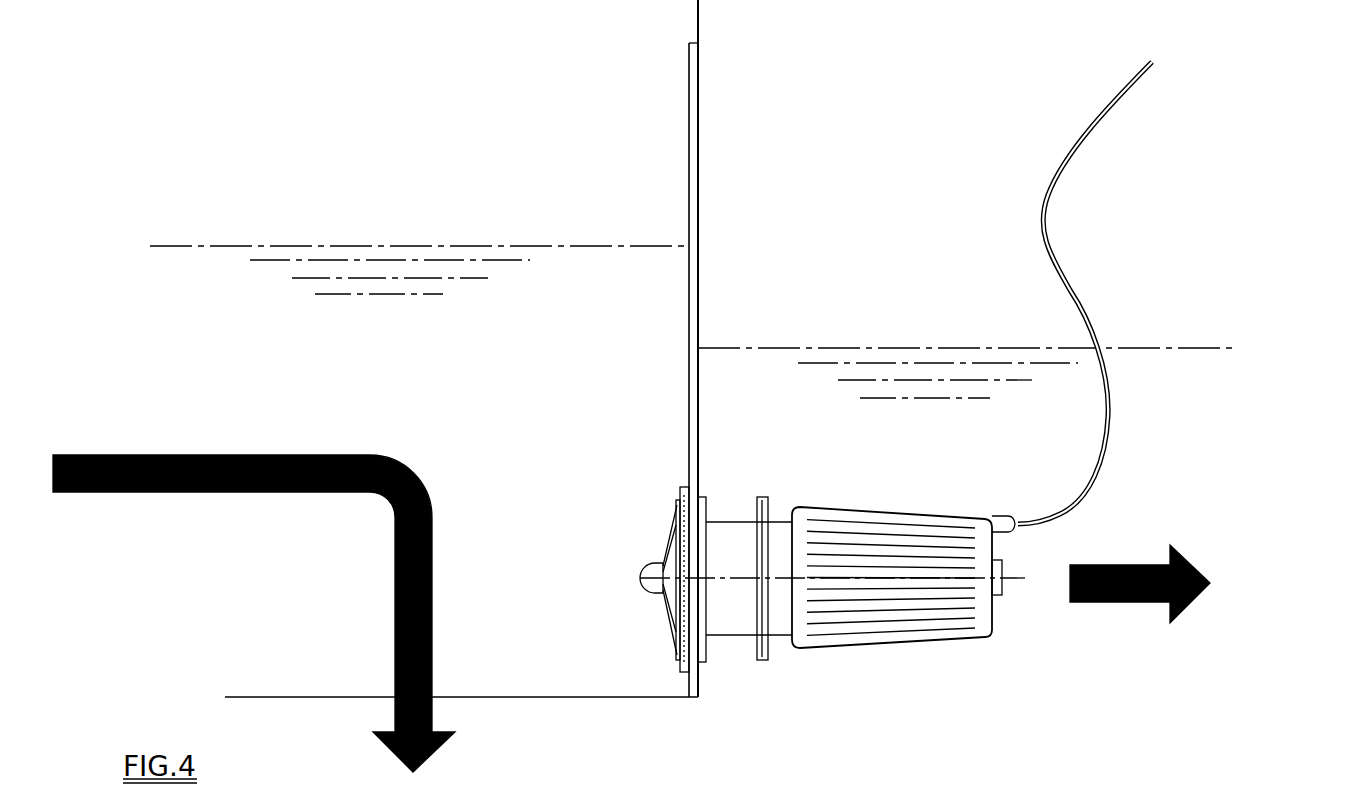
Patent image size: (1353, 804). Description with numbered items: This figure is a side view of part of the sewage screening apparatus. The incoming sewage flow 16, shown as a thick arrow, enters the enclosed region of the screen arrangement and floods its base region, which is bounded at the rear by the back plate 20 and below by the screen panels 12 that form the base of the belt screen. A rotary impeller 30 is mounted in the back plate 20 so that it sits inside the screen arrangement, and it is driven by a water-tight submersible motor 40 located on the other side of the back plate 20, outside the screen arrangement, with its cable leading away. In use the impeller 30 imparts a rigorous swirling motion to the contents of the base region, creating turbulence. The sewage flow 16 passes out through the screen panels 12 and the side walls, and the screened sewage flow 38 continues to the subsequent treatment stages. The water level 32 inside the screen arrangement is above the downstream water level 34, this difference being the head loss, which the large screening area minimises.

The screen panels 12 is at (315, 697).
The sewage flow 16 is at (168, 492).
The back plate 20 is at (695, 110).
The rotary impeller 30 is at (648, 553).
The water level 32 is at (405, 245).
The downstream water level 34 is at (885, 348).
The screened sewage flow 38 is at (1113, 604).
The submersible motor 40 is at (911, 653).